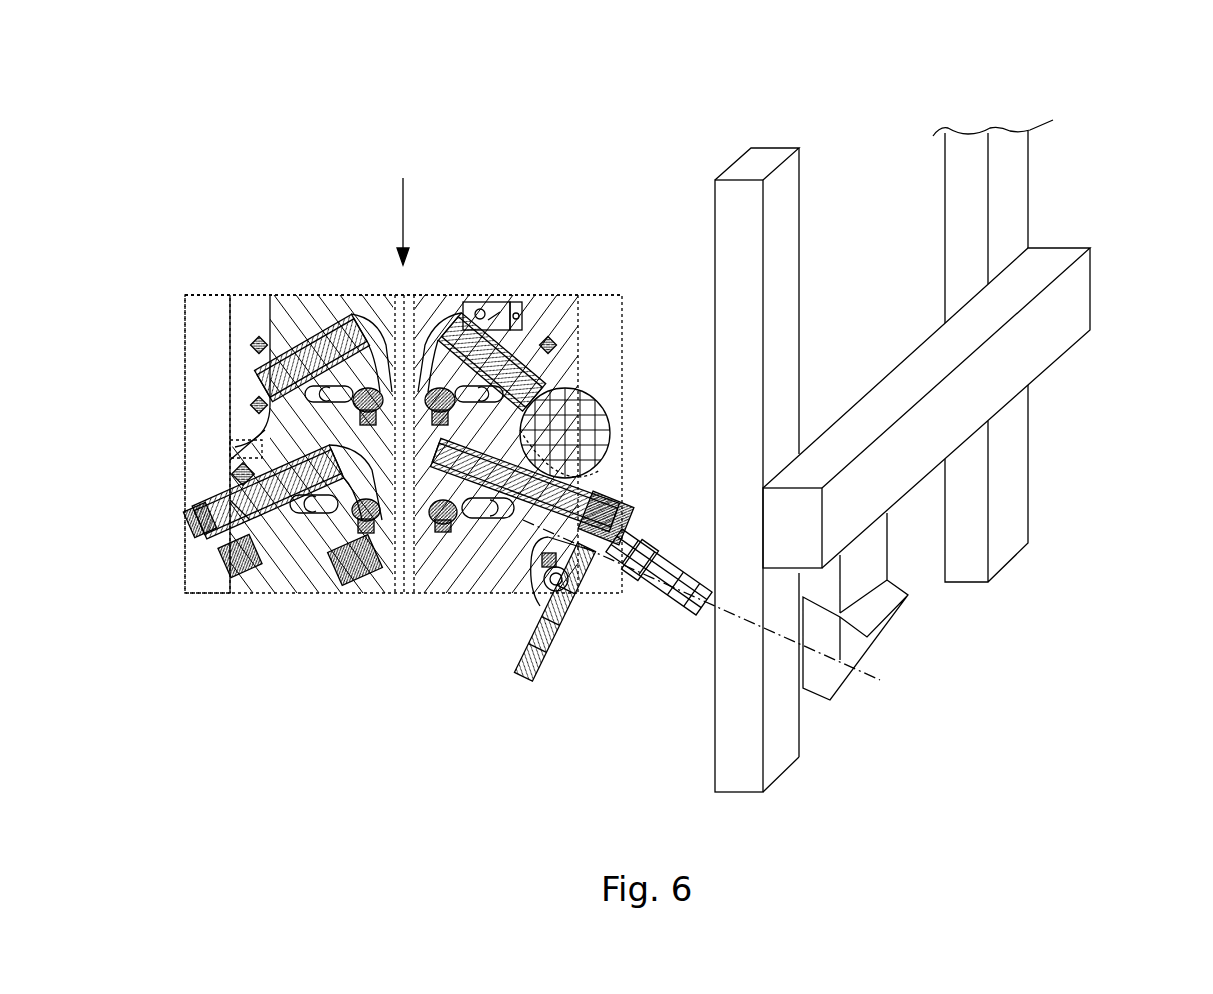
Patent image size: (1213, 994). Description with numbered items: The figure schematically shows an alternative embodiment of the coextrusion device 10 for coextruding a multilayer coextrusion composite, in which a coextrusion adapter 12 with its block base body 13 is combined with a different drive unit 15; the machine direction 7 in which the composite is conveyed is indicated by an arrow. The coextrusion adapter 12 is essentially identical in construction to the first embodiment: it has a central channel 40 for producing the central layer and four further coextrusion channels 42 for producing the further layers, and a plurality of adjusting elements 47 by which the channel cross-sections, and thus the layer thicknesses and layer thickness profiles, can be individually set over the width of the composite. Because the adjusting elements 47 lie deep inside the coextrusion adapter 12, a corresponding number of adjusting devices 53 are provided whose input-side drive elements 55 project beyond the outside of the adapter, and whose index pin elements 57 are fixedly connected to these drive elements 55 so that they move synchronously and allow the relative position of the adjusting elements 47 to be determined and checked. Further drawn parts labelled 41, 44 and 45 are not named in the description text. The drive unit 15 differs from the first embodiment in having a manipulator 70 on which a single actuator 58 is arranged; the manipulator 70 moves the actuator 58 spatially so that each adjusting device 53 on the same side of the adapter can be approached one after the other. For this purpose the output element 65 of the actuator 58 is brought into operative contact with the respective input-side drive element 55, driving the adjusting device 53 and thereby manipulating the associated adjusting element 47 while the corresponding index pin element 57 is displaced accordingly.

The machine direction 7 is at (403, 190).
The coextrusion device 10 is at (525, 155).
The coextrusion adapter 12 is at (166, 730).
The block base body 13 is at (240, 295).
The drive unit 15 is at (1152, 128).
The central channel 40 is at (425, 297).
The coupling 41 is at (640, 570).
The further coextrusion channels 42 is at (485, 325).
The drive housing 44 is at (542, 604).
The rotary drive unit 45 is at (525, 660).
The adjusting elements 47 is at (345, 580).
The adjusting devices 53 is at (230, 470).
The input-side drive elements 55 is at (190, 517).
The index pin elements 57 is at (183, 567).
The actuator 58 is at (872, 653).
The output element 65 is at (657, 553).
The manipulator 70 is at (1105, 452).